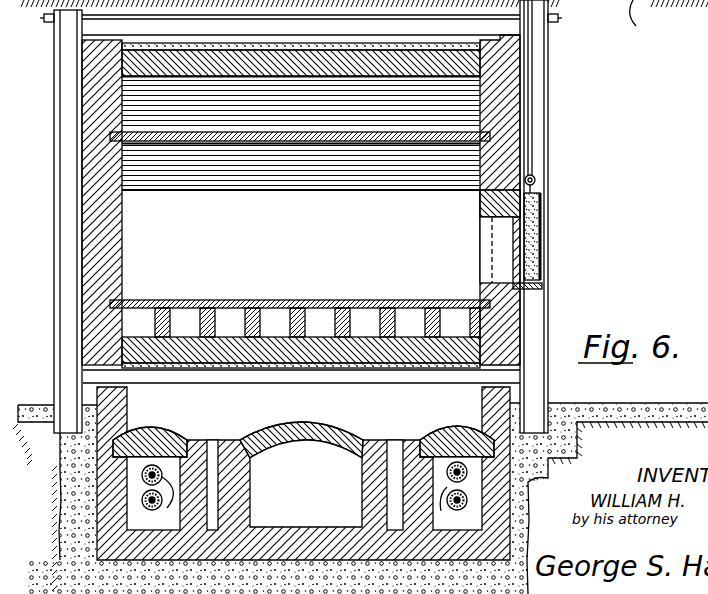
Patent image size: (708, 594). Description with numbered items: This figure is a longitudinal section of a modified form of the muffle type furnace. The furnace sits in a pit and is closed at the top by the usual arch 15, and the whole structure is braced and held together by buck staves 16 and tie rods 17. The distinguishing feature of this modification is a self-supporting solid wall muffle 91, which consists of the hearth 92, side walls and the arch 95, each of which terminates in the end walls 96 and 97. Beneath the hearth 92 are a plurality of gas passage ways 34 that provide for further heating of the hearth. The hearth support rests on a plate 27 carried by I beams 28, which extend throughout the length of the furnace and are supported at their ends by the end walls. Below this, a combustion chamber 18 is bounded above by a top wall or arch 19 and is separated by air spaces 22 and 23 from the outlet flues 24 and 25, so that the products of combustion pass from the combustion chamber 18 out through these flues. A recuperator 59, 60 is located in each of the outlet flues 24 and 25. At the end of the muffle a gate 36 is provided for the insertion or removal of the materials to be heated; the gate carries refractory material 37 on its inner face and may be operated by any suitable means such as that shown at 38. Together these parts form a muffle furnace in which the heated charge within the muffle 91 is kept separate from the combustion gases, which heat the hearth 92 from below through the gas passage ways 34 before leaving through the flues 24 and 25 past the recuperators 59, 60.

The arch 15 is at (381, 27).
The buck staves 16 is at (65, 195).
The tie rods 17 is at (236, 20).
The combustion chamber 18 is at (306, 483).
The top wall or arch 19 is at (314, 443).
The air space 22 is at (211, 440).
The air space 23 is at (400, 440).
The outlet flue 24 is at (150, 479).
The outlet flue 25 is at (457, 479).
The plate 27 is at (309, 366).
The I beams 28 is at (301, 462).
The gas passage ways 34 is at (317, 322).
The gate 36 is at (540, 232).
The refractory material 37 is at (523, 230).
The gate operating means 38 is at (707, 38).
The recuperator 59 is at (169, 504).
The recuperator 60 is at (449, 509).
The self-supporting solid wall muffle 91 is at (279, 141).
The hearth 92 is at (326, 300).
The arch 95 is at (322, 235).
The end wall 96 is at (94, 98).
The end wall 97 is at (505, 190).